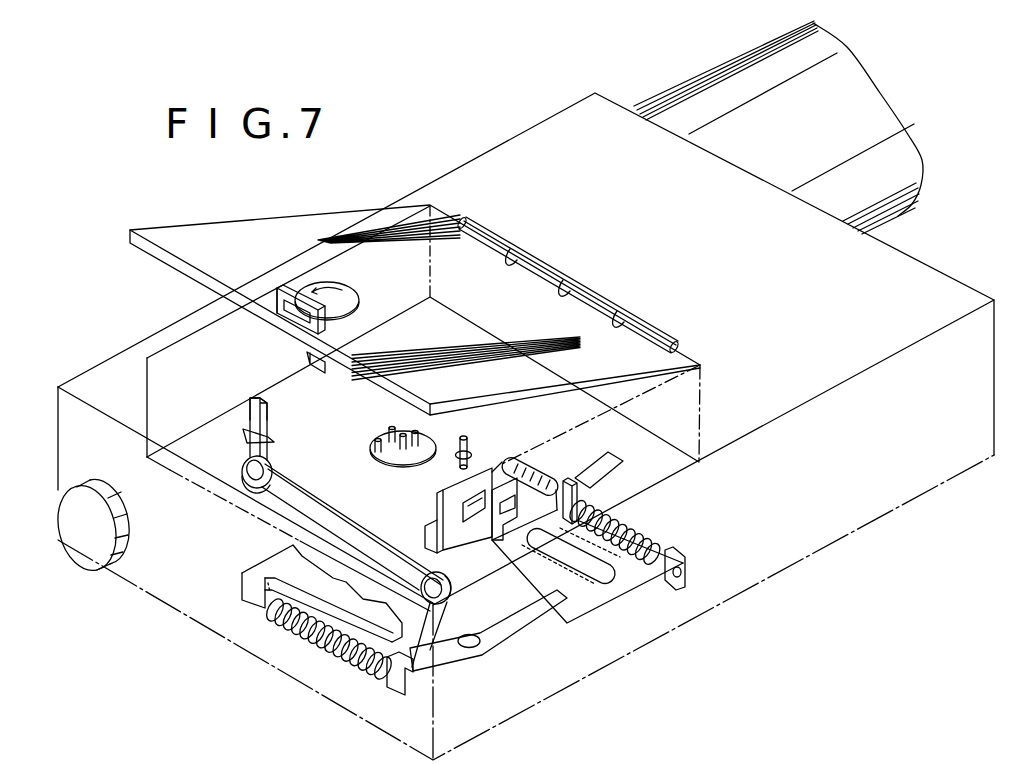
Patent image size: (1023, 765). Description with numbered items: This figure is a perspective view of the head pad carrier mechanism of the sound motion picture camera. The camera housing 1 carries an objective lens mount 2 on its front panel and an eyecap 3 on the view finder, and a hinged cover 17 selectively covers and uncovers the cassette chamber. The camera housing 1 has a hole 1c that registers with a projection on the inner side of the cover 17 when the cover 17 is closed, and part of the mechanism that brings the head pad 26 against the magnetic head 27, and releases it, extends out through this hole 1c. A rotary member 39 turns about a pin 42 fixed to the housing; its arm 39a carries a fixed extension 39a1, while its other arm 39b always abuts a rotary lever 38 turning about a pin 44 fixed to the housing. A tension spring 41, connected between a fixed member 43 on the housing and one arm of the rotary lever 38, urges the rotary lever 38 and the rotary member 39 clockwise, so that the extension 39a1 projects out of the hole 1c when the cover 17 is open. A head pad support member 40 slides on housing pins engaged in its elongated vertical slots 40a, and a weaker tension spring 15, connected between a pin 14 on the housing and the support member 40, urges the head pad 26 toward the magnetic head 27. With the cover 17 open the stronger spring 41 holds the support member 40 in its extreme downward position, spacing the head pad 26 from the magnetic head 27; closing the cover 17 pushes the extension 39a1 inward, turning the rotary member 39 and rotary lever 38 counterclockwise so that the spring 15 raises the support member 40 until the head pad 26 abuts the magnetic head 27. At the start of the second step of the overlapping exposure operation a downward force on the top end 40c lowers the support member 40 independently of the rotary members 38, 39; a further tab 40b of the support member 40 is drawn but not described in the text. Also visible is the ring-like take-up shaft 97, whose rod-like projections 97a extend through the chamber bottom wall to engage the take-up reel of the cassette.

The camera housing 1 is at (702, 256).
The hole 1c is at (268, 441).
The objective lens mount 2 is at (814, 139).
The eyecap 3 is at (88, 548).
The pin 14 is at (467, 446).
The tension spring 15 is at (637, 535).
The cover 17 is at (234, 257).
The head pad 26 is at (508, 505).
The magnetic head 27 is at (468, 522).
The rotary lever 38 is at (508, 625).
The rotary member 39 is at (352, 534).
The arm 39a is at (286, 487).
The extension 39a1 is at (261, 413).
The arm 39b is at (414, 676).
The head pad support member 40 is at (640, 572).
The elongated vertical slots 40a is at (600, 580).
The tab 40b is at (612, 458).
The top end 40c is at (508, 452).
The tension spring 41 is at (322, 641).
The pin 42 is at (440, 594).
The fixed member 43 is at (258, 573).
The pin 44 is at (472, 648).
The take-up shaft 97 is at (410, 458).
The rod-like projections 97a is at (391, 430).